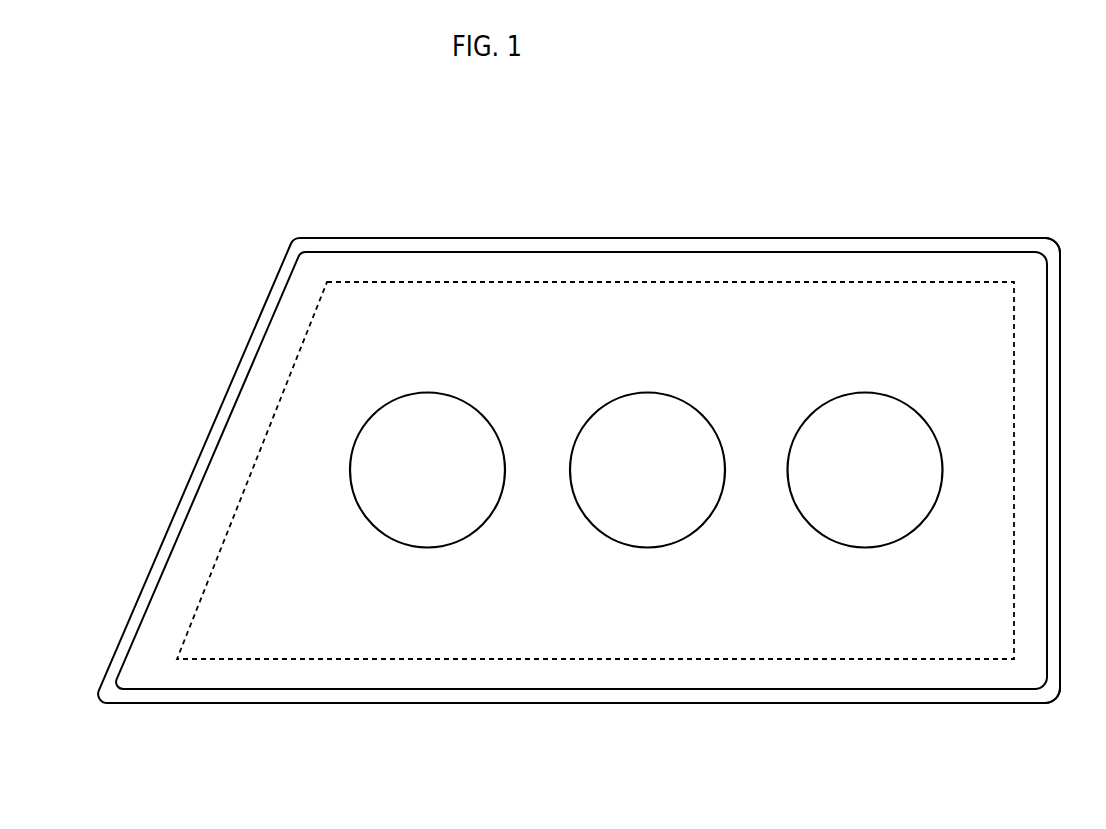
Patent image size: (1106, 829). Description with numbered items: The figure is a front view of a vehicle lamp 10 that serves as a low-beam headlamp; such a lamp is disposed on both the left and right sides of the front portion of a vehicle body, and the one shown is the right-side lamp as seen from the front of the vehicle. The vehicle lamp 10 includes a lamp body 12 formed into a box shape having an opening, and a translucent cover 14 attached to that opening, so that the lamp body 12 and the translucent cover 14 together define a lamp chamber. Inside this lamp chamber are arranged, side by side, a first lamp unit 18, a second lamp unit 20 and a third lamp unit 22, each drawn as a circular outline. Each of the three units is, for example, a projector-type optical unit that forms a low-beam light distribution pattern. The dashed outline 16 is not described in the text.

The vehicle lamp 10 is at (598, 742).
The lamp body 12 is at (870, 238).
The translucent cover 14 is at (605, 250).
The display region 16 is at (595, 470).
The first lamp unit 18 is at (917, 398).
The second lamp unit 20 is at (696, 398).
The third lamp unit 22 is at (478, 398).